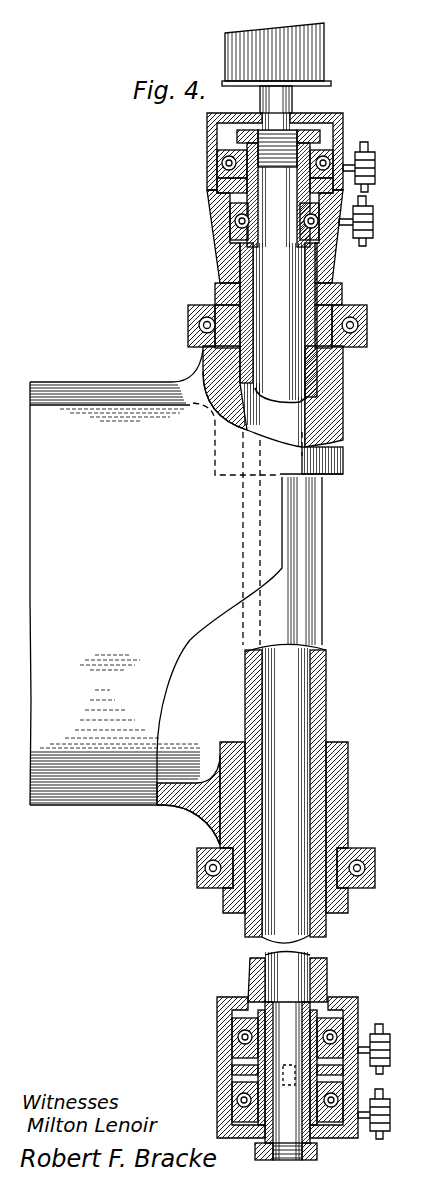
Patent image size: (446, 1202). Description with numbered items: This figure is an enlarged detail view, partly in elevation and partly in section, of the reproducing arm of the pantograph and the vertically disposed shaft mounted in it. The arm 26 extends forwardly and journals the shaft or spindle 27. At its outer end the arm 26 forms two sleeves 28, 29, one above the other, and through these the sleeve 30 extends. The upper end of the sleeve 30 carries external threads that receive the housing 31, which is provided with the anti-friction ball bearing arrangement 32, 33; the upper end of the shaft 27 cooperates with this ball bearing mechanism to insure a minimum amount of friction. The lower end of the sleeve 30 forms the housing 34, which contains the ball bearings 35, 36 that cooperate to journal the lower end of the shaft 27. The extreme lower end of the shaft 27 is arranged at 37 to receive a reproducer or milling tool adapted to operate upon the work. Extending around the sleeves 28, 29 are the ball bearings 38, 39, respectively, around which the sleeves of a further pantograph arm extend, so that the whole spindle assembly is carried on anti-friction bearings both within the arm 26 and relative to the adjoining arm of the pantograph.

The arm 26 is at (152, 597).
The shaft or spindle 27 is at (290, 375).
The sleeve 28 is at (340, 437).
The sleeve 29 is at (349, 795).
The sleeve 30 is at (246, 653).
The housing 31 is at (337, 273).
The anti-friction ball bearing arrangement 32 is at (305, 222).
The anti-friction ball bearing arrangement 33 is at (208, 165).
The housing 34 is at (359, 1010).
The ball bearing 35 is at (231, 1042).
The ball bearing 36 is at (334, 1084).
The lower end of the shaft 37 is at (318, 1158).
The ball bearing 38 is at (355, 306).
The ball bearing 39 is at (370, 888).